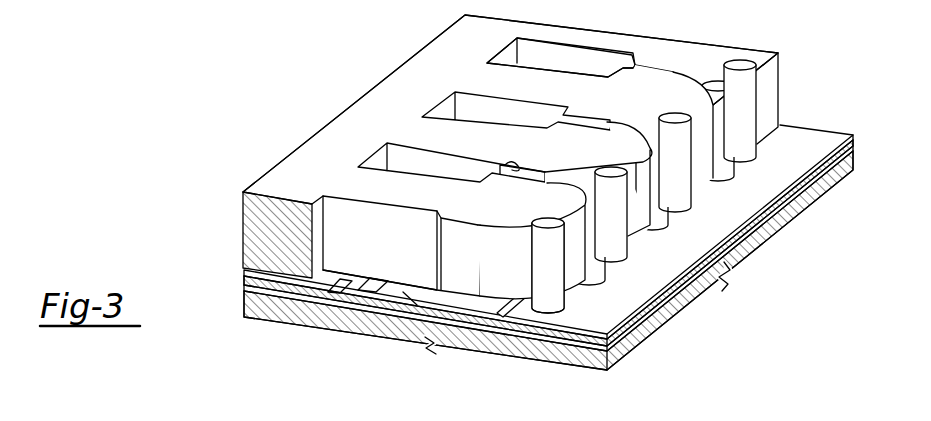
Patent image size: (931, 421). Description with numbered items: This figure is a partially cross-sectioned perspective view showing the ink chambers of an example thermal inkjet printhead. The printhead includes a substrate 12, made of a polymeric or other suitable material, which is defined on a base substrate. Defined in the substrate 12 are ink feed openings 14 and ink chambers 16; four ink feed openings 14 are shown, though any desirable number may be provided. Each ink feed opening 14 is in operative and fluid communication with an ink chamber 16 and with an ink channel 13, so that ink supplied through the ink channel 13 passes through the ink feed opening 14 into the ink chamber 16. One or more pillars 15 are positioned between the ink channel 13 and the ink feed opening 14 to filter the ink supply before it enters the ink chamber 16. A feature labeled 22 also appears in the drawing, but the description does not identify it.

The substrate 12 is at (510, 155).
The ink channel 13 is at (803, 140).
The ink feed opening 14 is at (512, 168).
The pillars 15 is at (605, 200).
The ink chamber 16 is at (385, 158).
The trace tab 22 is at (348, 284).